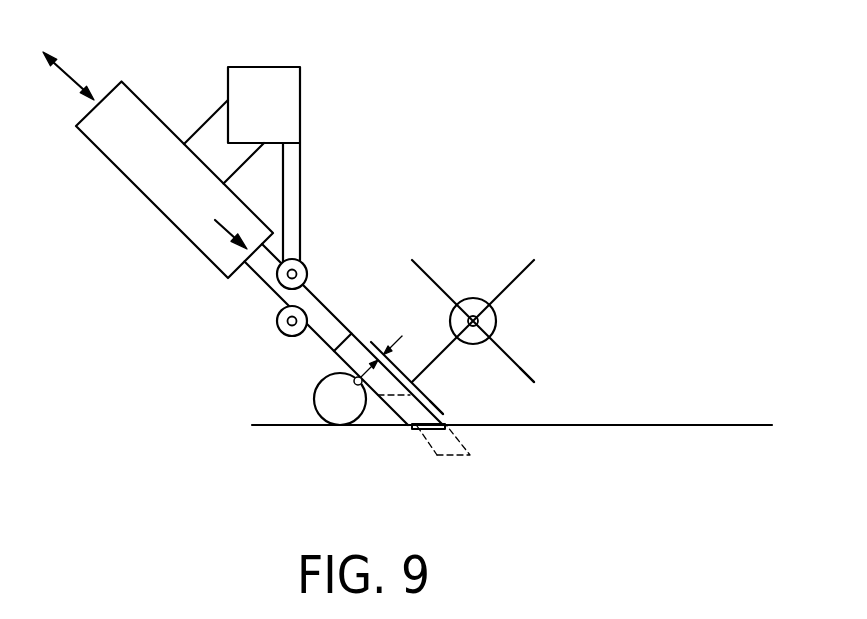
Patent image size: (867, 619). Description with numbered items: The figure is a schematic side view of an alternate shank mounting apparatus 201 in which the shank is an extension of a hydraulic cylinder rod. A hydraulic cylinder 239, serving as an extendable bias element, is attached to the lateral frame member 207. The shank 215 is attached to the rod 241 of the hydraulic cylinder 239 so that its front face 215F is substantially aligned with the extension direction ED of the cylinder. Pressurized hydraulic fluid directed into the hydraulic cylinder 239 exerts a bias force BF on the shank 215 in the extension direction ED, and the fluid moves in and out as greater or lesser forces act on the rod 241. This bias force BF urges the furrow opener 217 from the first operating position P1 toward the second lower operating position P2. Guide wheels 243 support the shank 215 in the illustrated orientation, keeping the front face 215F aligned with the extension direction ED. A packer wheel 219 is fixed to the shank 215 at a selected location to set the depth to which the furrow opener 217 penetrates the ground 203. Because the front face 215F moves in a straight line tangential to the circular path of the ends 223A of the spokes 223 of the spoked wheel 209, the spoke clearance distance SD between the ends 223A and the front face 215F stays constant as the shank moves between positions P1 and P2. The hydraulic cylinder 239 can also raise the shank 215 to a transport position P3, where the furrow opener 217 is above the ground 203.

The apparatus 201 is at (470, 65).
The ground 203 is at (707, 425).
The lateral frame member 207 is at (302, 103).
The spoked wheel 209 is at (525, 324).
The shank 215 is at (388, 410).
The front face 215F is at (430, 398).
The furrow opener 217 is at (446, 430).
The packer wheel 219 is at (314, 392).
The spokes 223 is at (508, 352).
The ends of the spokes 223A is at (535, 381).
The hydraulic cylinder 239 is at (118, 171).
The rod 241 is at (257, 279).
The guide wheels 243 is at (277, 324).
The extension direction ED is at (72, 76).
The bias force BF is at (218, 227).
The spoke clearance distance SD is at (397, 343).
The first operating position P1 is at (432, 433).
The second lower operating position P2 is at (456, 457).
The transport position P3 is at (393, 392).